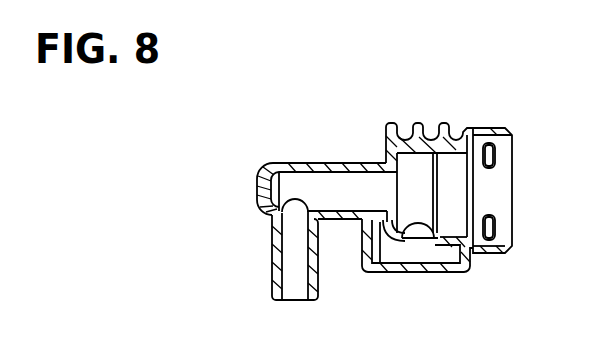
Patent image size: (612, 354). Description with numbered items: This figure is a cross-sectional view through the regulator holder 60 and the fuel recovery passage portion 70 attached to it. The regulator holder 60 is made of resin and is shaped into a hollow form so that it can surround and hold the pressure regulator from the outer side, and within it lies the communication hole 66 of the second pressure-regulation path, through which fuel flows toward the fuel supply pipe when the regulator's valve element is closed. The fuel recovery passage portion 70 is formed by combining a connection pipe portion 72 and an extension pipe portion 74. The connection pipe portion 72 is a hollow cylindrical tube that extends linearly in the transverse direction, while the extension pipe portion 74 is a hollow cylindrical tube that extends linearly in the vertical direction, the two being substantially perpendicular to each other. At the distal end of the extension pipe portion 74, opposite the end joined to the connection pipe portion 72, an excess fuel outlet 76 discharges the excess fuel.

The regulator holder 60 is at (469, 126).
The communication hole 66 is at (418, 233).
The fuel recovery passage portion 70 is at (290, 206).
The connection pipe portion 72 is at (297, 163).
The extension pipe portion 74 is at (272, 250).
The excess fuel outlet 76 is at (290, 302).